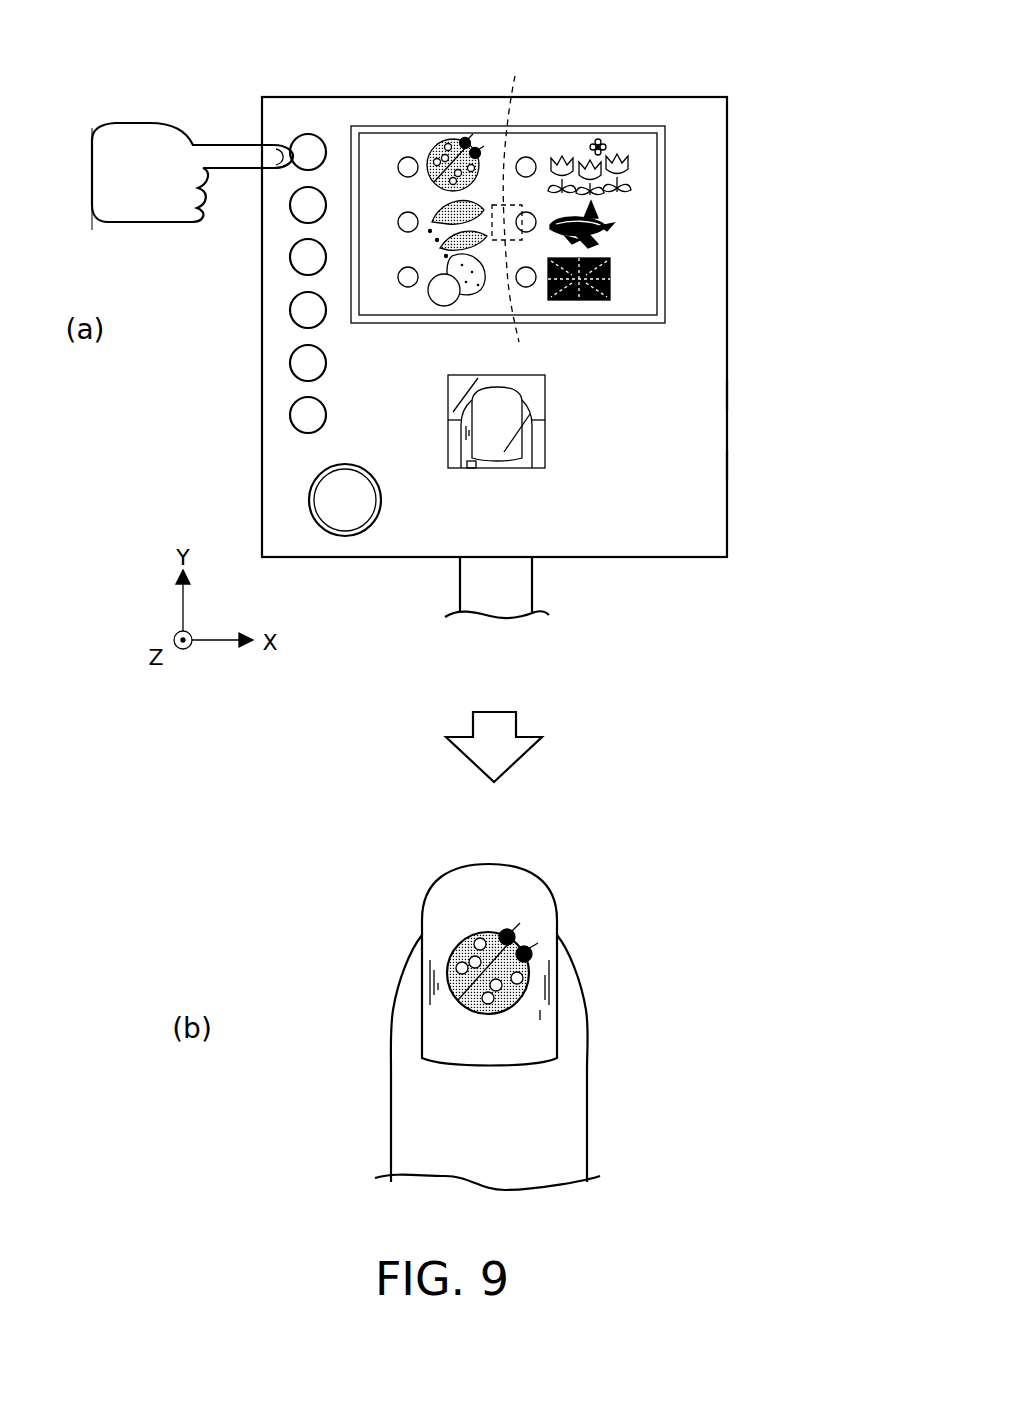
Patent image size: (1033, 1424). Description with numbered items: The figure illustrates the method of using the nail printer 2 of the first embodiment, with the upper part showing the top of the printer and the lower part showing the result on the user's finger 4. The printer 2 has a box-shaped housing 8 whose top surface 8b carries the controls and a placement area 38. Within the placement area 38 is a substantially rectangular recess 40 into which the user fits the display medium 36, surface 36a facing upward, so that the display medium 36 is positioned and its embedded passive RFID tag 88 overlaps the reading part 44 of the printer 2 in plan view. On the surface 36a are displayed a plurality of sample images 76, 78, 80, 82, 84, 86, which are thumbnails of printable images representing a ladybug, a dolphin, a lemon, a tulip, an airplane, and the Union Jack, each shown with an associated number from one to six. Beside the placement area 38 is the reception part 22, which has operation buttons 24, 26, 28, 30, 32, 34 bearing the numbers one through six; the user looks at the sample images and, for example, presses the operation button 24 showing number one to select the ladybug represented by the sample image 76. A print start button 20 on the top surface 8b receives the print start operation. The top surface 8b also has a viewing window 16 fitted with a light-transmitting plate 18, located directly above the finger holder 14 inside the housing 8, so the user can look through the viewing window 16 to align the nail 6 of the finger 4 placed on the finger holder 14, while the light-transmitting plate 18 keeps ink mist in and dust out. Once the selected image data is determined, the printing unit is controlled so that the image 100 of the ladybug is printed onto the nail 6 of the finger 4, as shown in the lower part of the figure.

The printer 2 is at (756, 71).
The finger 4 is at (516, 582).
The nail 6 is at (520, 407).
The housing 8 is at (703, 394).
The top surface 8b is at (700, 464).
The finger holder 14 is at (536, 443).
The viewing window 16 is at (473, 470).
The light-transmitting plate 18 is at (536, 380).
The print start button 20 is at (343, 518).
The reception part 22 is at (205, 232).
The operation button 24 is at (297, 168).
The operation button 26 is at (297, 221).
The operation button 28 is at (297, 271).
The operation button 30 is at (296, 321).
The operation button 32 is at (294, 370).
The operation button 34 is at (292, 414).
The display medium 36 is at (640, 148).
The surface 36a is at (636, 305).
The placement area 38 is at (588, 148).
The recess 40 is at (398, 128).
The reading part 44 is at (515, 288).
The sample image 76 is at (435, 140).
The sample image 78 is at (443, 250).
The sample image 80 is at (462, 300).
The sample image 82 is at (630, 170).
The sample image 84 is at (602, 230).
The sample image 86 is at (612, 278).
The RFID tag 88 is at (513, 194).
The image 100 is at (530, 975).